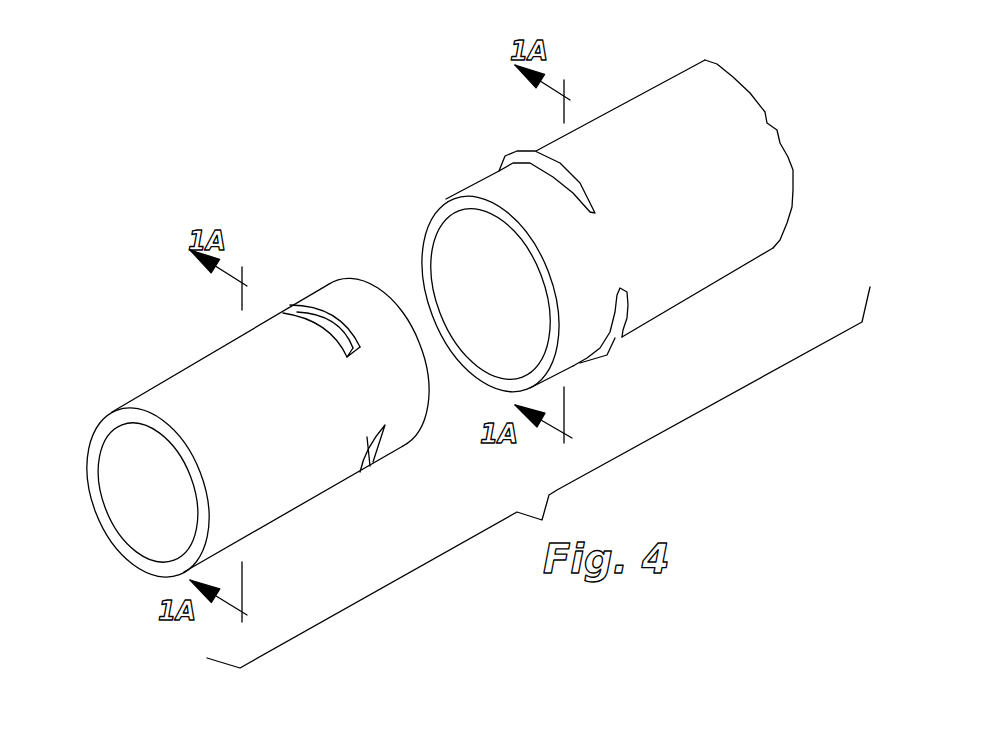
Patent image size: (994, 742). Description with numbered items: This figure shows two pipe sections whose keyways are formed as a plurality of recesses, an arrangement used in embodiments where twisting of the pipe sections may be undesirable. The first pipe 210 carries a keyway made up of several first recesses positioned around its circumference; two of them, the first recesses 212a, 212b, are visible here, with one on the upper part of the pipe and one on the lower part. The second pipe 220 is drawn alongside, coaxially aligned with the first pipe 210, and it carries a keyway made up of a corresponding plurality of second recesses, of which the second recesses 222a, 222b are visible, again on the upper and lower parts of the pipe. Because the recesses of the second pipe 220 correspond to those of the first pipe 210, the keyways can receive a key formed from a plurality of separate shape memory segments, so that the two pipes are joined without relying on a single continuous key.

The first pipe 210 is at (146, 387).
The first recess 212a is at (296, 308).
The first recess 212b is at (368, 463).
The second pipe 220 is at (625, 97).
The second recess 222a is at (505, 160).
The second recess 222b is at (605, 353).